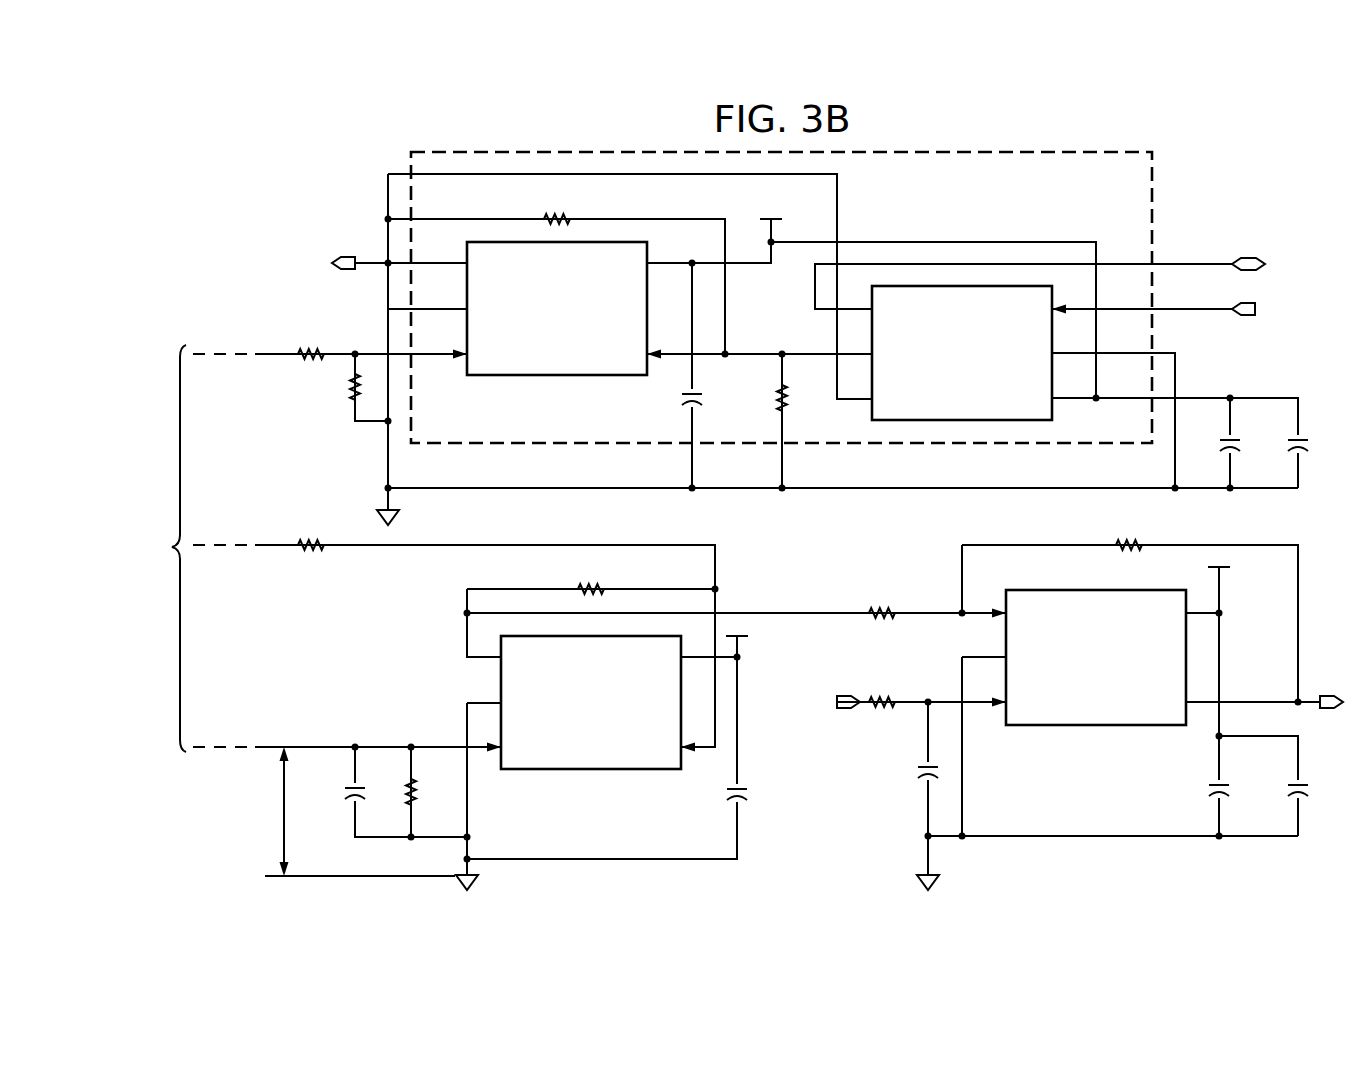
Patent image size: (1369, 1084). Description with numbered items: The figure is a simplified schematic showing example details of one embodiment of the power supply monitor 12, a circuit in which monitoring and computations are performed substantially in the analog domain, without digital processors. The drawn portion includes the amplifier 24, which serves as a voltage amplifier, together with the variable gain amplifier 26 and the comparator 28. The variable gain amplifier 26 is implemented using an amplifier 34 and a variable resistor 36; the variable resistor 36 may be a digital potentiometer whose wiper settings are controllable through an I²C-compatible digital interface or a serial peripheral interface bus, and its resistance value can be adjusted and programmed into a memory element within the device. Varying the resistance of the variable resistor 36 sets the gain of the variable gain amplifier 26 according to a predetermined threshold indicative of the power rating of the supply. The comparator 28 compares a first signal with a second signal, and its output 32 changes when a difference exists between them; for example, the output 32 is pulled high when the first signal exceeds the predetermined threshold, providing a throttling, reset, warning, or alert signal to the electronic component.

The power supply monitor 12 is at (276, 141).
The amplifier 24 is at (589, 701).
The variable gain amplifier 26 is at (1168, 186).
The comparator 28 is at (1094, 657).
The output 32 is at (1330, 710).
The amplifier 34 is at (555, 307).
The variable resistor 36 is at (965, 352).